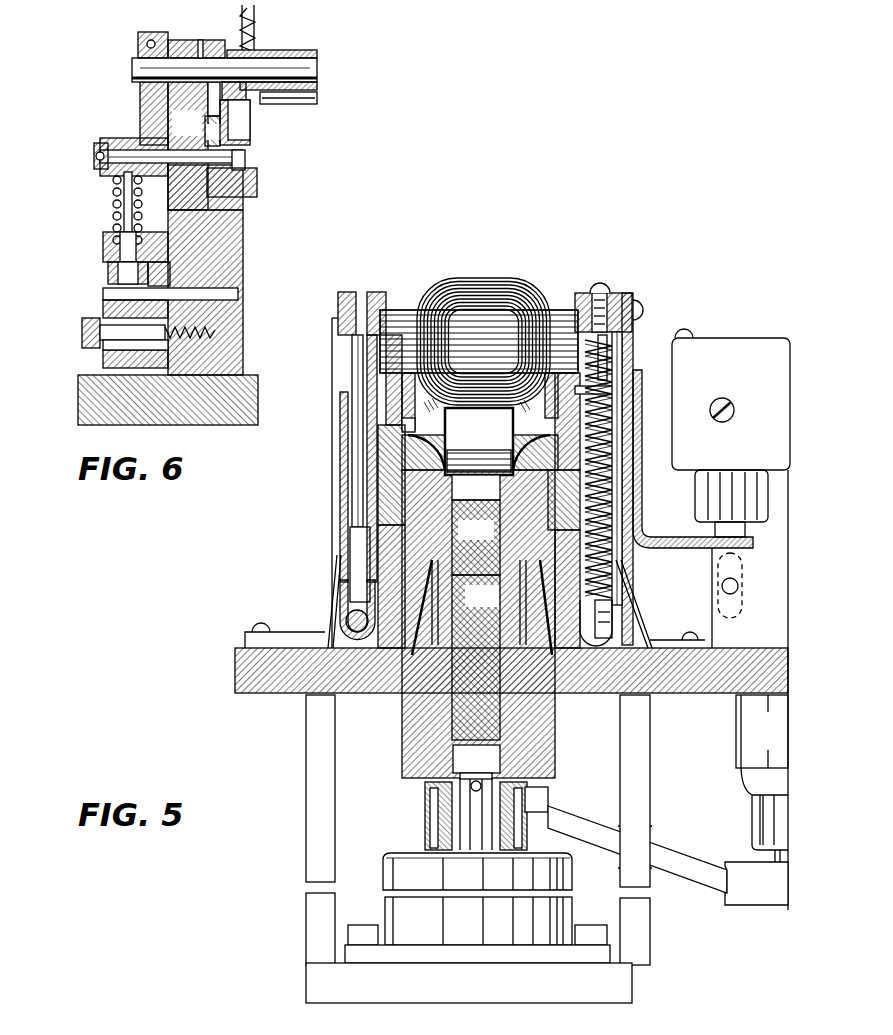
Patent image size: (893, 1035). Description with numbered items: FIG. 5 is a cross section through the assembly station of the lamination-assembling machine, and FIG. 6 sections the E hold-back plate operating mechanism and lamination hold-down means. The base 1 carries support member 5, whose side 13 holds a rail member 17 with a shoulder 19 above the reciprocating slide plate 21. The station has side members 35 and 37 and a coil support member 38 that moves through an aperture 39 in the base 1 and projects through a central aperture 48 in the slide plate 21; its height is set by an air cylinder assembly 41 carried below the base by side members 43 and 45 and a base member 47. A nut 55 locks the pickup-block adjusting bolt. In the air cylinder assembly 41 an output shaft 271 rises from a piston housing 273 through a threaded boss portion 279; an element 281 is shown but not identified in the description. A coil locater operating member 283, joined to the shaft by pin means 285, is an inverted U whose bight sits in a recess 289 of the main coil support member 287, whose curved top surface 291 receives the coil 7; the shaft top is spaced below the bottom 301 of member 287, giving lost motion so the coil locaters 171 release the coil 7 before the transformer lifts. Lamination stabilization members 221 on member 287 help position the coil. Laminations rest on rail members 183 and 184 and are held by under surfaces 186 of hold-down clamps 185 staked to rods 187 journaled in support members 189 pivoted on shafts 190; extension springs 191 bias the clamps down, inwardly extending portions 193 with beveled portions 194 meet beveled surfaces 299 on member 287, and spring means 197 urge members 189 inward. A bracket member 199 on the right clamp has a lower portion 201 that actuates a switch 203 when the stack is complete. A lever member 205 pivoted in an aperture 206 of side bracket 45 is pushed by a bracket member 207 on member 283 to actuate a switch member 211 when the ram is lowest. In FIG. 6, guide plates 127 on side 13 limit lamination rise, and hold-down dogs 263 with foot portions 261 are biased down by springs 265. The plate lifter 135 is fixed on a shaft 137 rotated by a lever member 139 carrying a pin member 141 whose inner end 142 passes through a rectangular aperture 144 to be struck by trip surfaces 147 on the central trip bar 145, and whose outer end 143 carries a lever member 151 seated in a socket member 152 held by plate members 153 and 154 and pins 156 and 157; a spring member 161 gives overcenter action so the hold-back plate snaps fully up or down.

In FIG. 6, the base 1 is at (80, 405).
In FIG. 5, the base 1 is at (236, 660).
In FIG. 6, the slide plate and magazine support member 5 is at (262, 253).
In FIG. 5, the coil 7 is at (520, 284).
In FIG. 6, the side 13 is at (240, 330).
In FIG. 6, the rail or plate member 17 is at (216, 114).
In FIG. 6, the shoulder 19 is at (187, 123).
In FIG. 6, the slide plate 21 is at (250, 192).
In FIG. 5, the slide plate 21 is at (423, 451).
In FIG. 5, the side member 35 is at (337, 433).
In FIG. 5, the side member 37 is at (653, 611).
In FIG. 5, the coil support member 38 is at (388, 746).
In FIG. 5, the aperture 39 is at (566, 694).
In FIG. 5, the air cylinder assembly 41 is at (376, 847).
In FIG. 5, the side member 43 is at (306, 796).
In FIG. 5, the side member 45 is at (650, 787).
In FIG. 5, the base member 47 is at (469, 983).
In FIG. 5, the aperture 48 is at (535, 421).
In FIG. 6, the nut 55 is at (85, 334).
In FIG. 6, the guide plate 127 is at (218, 44).
In FIG. 6, the plate lifter 135 is at (318, 90).
In FIG. 6, the shaft 137 is at (312, 66).
In FIG. 6, the lever member 139 is at (140, 100).
In FIG. 6, the pin member 141 is at (125, 150).
In FIG. 6, the inner end 142 is at (245, 156).
In FIG. 6, the outer end 143 is at (95, 155).
In FIG. 6, the rectangular aperture 144 is at (185, 173).
In FIG. 5, the central trip bar 145 is at (433, 416).
In FIG. 6, the trip surface 147 is at (246, 168).
In FIG. 6, the lever member 151 is at (130, 187).
In FIG. 6, the socket member 152 is at (104, 252).
In FIG. 6, the plate member 153 is at (110, 272).
In FIG. 6, the plate member 154 is at (170, 276).
In FIG. 6, the pin member 156 is at (104, 297).
In FIG. 6, the pin member 157 is at (102, 360).
In FIG. 6, the spring member 161 is at (116, 202).
In FIG. 5, the coil locater 171 is at (476, 487).
In FIG. 6, the rail member 183 is at (266, 141).
In FIG. 5, the rail member 183 is at (392, 372).
In FIG. 5, the rail member 184 is at (562, 372).
In FIG. 5, the hold-down clamp 185 is at (345, 292).
In FIG. 5, the under surface 186 is at (479, 341).
In FIG. 5, the rod member 187 is at (352, 343).
In FIG. 5, the support member 189 is at (346, 489).
In FIG. 5, the shaft 190 is at (358, 634).
In FIG. 5, the extension coil spring member 191 is at (616, 446).
In FIG. 5, the inwardly extending portion 193 is at (431, 613).
In FIG. 5, the beveled portion 194 is at (480, 602).
In FIG. 5, the spring means 197 is at (330, 583).
In FIG. 5, the bracket member 199 is at (635, 332).
In FIG. 5, the lower portion 201 is at (668, 547).
In FIG. 5, the switch 203 is at (731, 619).
In FIG. 5, the lever member 205 is at (675, 870).
In FIG. 5, the aperture 206 is at (626, 826).
In FIG. 5, the bracket member 207 is at (550, 793).
In FIG. 5, the switch member 211 is at (753, 707).
In FIG. 5, the lamination stabilization member 221 is at (508, 428).
In FIG. 6, the foot portion 261 is at (240, 116).
In FIG. 6, the lamination hold-down dog 263 is at (246, 52).
In FIG. 6, the spring 265 is at (256, 18).
In FIG. 5, the output shaft 271 is at (453, 772).
In FIG. 5, the piston housing 273 is at (383, 882).
In FIG. 5, the boss portion 279 is at (512, 846).
In FIG. 5, the stud 281 is at (430, 830).
In FIG. 5, the coil locater operating member 283 is at (408, 787).
In FIG. 5, the pin means 285 is at (476, 759).
In FIG. 5, the main coil support member 287 is at (402, 712).
In FIG. 5, the recess 289 is at (476, 657).
In FIG. 5, the curved top surface 291 is at (508, 453).
In FIG. 5, the beveled surface 299 is at (482, 603).
In FIG. 5, the bottom 301 is at (478, 746).